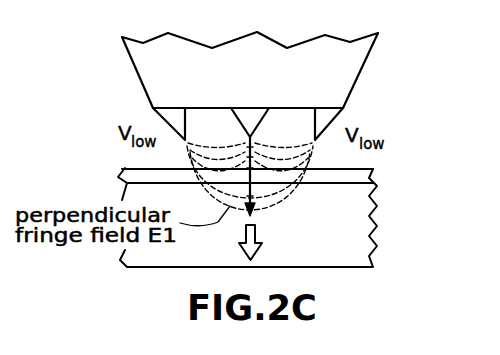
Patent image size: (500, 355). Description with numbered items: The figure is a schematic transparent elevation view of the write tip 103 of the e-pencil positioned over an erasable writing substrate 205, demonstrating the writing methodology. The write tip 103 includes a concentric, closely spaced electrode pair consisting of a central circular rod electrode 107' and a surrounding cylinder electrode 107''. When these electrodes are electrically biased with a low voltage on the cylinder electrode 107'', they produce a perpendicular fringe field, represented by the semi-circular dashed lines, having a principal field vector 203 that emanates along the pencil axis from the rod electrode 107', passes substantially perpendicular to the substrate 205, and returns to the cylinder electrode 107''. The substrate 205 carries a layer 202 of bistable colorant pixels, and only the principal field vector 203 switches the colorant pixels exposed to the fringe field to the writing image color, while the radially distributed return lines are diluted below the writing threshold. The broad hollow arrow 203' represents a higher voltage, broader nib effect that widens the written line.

The write tip 103 is at (141, 83).
The circular rod electrode 107' is at (248, 136).
The cylinder electrode 107'' is at (248, 98).
The layer of colorant 202 is at (373, 172).
The principal field vector 203 is at (267, 182).
The higher voltage field vector 203' is at (288, 241).
The erasable writing substrate 205 is at (381, 218).